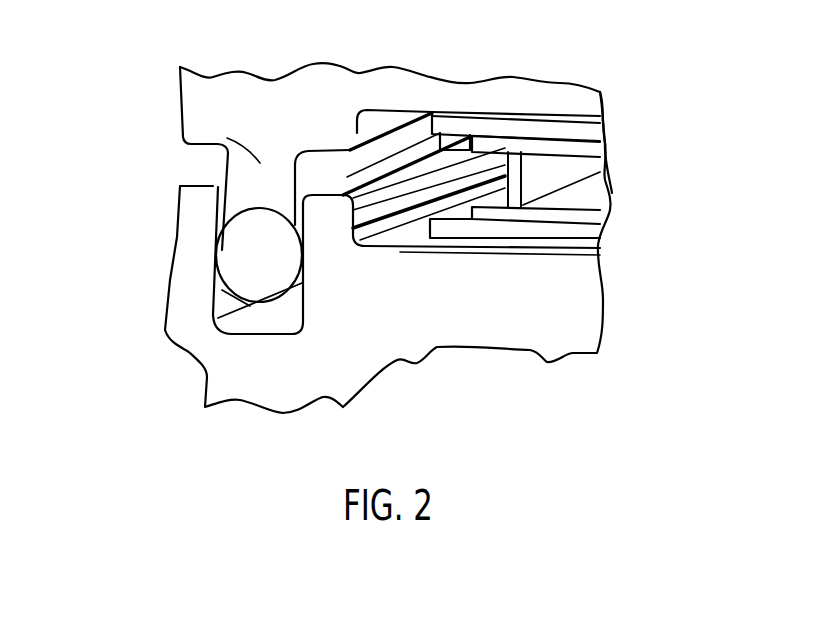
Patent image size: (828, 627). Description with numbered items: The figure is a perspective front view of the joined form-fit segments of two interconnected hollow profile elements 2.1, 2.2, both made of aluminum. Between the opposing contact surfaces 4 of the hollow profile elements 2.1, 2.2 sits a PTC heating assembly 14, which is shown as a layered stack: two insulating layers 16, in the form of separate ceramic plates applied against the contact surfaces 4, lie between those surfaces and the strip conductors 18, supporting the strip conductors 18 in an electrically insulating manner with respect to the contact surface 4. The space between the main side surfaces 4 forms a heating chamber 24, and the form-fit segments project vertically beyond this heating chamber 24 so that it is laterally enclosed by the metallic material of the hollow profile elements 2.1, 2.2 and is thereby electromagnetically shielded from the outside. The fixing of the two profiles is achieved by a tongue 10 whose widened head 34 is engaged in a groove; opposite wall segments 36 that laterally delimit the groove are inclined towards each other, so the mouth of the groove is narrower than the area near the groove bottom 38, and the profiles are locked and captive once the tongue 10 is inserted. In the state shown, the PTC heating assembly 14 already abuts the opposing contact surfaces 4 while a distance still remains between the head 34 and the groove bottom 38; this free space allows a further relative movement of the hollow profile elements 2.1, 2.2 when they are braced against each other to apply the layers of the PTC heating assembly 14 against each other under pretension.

The hollow profile element 2.1 is at (185, 88).
The hollow profile element 2.2 is at (213, 377).
The contact surface 4 is at (394, 110).
The tongue 10 is at (217, 292).
The PTC heating assembly 14 is at (621, 181).
The insulating layer 16 is at (226, 138).
The strip conductor 18 is at (590, 148).
The heating chamber 24 is at (347, 177).
The widened head 34 is at (233, 272).
The wall segment 36 is at (323, 213).
The groove bottom 38 is at (247, 319).